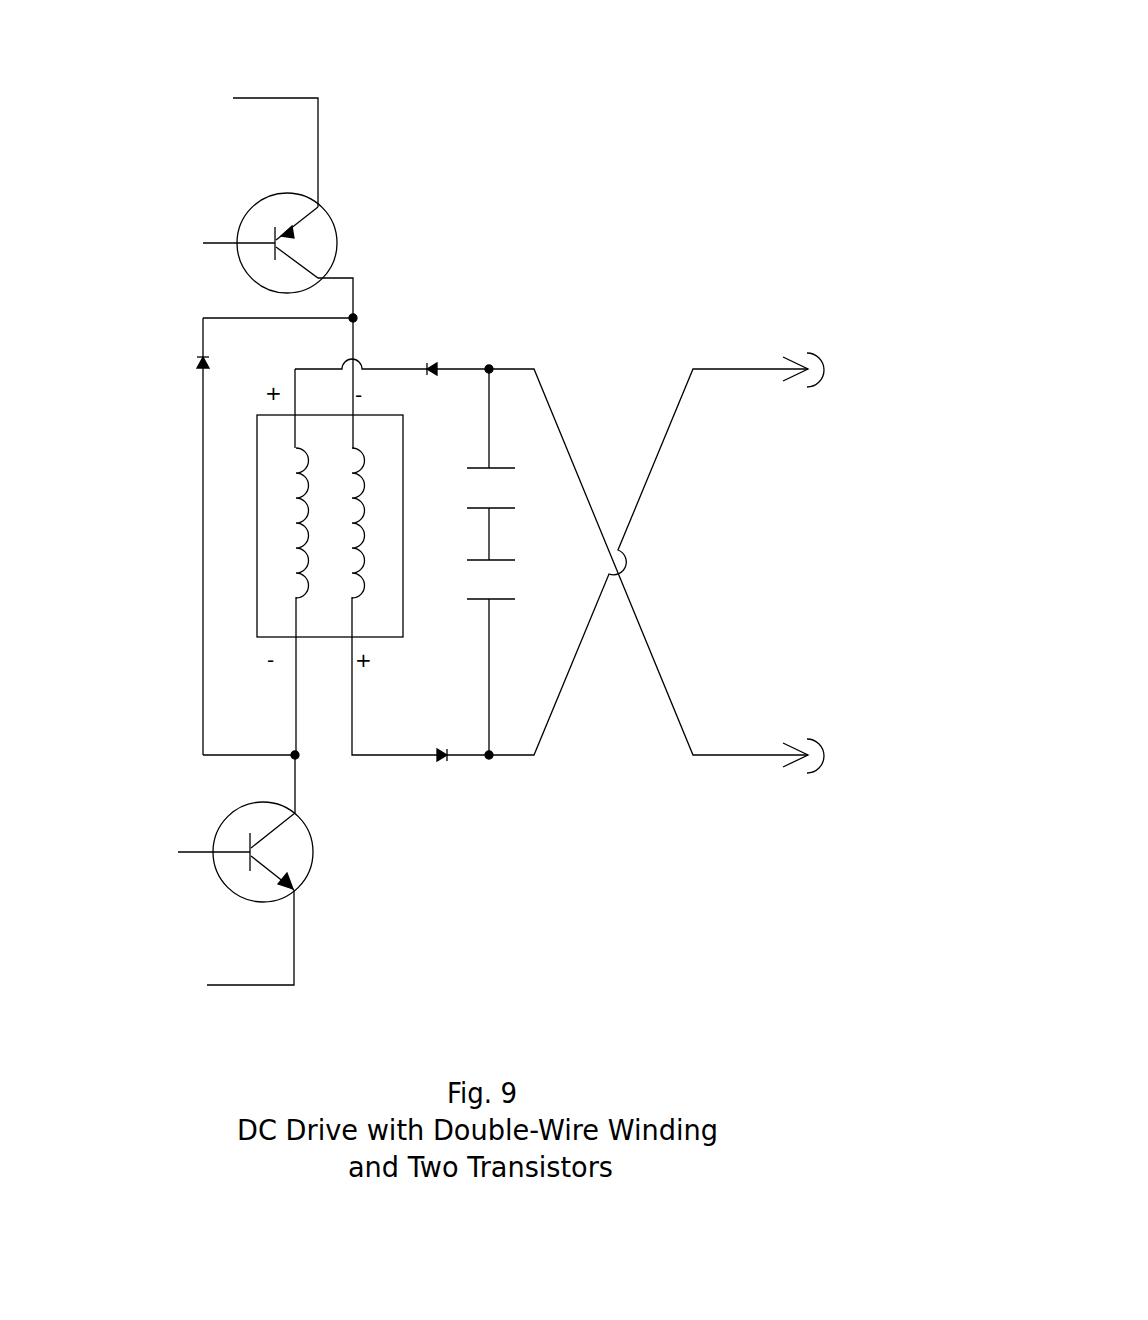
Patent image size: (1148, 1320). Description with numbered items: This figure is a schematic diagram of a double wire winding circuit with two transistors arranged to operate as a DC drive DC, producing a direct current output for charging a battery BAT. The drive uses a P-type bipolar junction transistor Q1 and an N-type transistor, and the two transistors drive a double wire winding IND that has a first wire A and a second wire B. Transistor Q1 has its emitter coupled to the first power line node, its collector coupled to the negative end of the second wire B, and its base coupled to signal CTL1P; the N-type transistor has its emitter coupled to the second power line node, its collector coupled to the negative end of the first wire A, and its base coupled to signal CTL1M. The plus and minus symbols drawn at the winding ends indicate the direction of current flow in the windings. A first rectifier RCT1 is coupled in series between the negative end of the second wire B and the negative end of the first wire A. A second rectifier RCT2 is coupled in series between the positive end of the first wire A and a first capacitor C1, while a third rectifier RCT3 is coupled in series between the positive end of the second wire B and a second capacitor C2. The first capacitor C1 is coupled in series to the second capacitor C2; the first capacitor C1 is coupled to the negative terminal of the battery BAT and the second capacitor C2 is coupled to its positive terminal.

The DC drive DC is at (249, 511).
The transistor Q1 is at (305, 255).
The signal CTL1P is at (200, 250).
The signal CTL1M is at (205, 828).
The first rectifier RCT1 is at (168, 365).
The second rectifier RCT2 is at (451, 355).
The third rectifier RCT3 is at (445, 774).
The double wire winding IND is at (309, 526).
The first wire of the double wire winding A is at (292, 523).
The second wire of the double wire winding B is at (348, 523).
The first capacitor C1 is at (475, 464).
The second capacitor C2 is at (475, 657).
The battery BAT is at (694, 563).